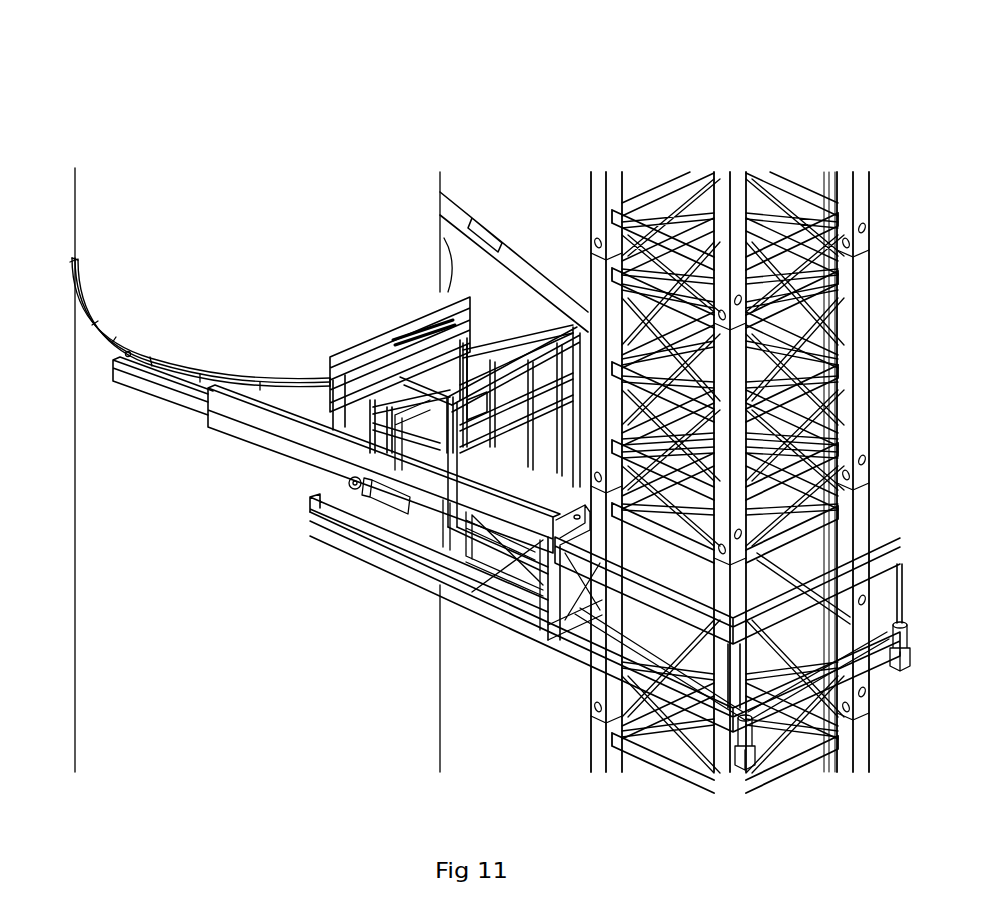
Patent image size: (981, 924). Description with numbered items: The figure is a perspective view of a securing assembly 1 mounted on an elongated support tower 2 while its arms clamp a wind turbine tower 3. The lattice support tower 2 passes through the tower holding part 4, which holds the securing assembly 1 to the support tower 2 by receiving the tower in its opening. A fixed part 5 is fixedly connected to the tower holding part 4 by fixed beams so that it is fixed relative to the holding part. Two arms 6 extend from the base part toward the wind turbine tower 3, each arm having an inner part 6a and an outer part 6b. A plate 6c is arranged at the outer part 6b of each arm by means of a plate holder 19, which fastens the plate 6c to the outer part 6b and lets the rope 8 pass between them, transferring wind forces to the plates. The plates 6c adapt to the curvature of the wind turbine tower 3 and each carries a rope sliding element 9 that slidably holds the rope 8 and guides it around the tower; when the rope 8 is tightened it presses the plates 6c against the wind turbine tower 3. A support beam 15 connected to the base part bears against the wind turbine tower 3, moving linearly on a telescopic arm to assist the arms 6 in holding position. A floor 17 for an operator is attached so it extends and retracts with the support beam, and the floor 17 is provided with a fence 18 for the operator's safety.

The securing assembly 1 is at (525, 210).
The elongated support tower 2 is at (715, 165).
The wind turbine tower 3 is at (197, 193).
The tower holding part 4 is at (634, 580).
The fixed part 5 is at (436, 582).
The arms 6 is at (186, 470).
The inner part 6a is at (281, 442).
The outer part 6b is at (185, 402).
The plate 6c is at (179, 362).
The rope 8 is at (252, 378).
The rope sliding element 9 is at (106, 326).
The support beam 15 is at (437, 393).
The floor 17 is at (405, 510).
The fence 18 is at (392, 419).
The plate holder 19 is at (110, 349).